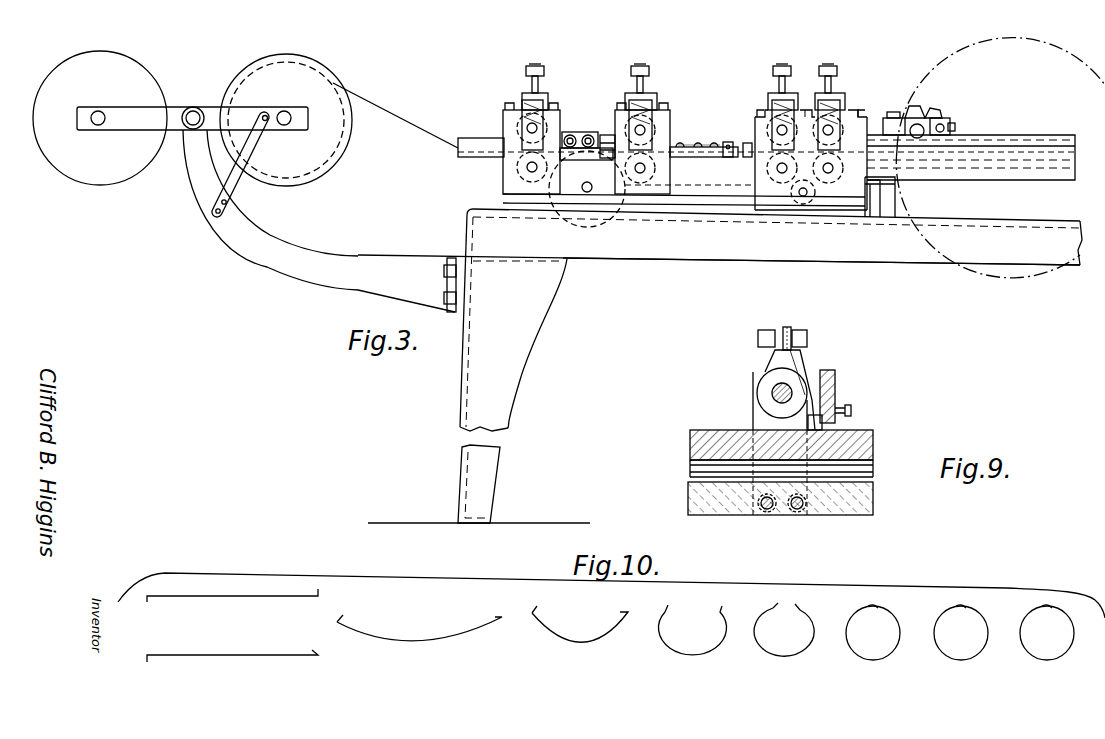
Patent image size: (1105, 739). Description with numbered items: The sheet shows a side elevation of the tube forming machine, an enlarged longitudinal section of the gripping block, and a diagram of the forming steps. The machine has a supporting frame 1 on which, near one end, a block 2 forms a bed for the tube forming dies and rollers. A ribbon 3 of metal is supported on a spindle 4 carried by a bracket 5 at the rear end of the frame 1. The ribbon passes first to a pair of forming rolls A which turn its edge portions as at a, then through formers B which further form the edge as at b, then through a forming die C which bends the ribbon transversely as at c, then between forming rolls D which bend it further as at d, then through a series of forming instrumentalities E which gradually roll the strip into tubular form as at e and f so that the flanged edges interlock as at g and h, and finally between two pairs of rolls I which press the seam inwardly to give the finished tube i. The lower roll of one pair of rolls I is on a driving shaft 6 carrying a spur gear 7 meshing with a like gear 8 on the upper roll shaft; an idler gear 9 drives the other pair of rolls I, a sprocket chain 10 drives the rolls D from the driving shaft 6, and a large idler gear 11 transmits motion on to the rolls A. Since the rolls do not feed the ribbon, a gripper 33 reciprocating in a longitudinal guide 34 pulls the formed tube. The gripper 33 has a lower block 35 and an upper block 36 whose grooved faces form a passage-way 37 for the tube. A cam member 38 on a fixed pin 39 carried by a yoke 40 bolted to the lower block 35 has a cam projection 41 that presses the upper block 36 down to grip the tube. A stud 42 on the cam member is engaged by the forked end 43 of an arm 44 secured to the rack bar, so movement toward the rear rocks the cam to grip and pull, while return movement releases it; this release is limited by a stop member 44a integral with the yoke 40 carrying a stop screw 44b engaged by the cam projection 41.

In FIG. 3, the supporting frame 1 is at (466, 214).
In FIG. 3, the block 2 is at (660, 206).
In FIG. 3, the ribbon 3 is at (388, 106).
In FIG. 3, the spindle 4 is at (284, 110).
In FIG. 3, the bracket 5 is at (325, 256).
In FIG. 3, the driving shaft 6 is at (782, 173).
In FIG. 3, the spur gear 7 is at (764, 176).
In FIG. 3, the gear 8 is at (803, 115).
In FIG. 3, the idler gear 9 is at (803, 205).
In FIG. 3, the sprocket chain 10 is at (705, 186).
In FIG. 3, the large idler gear 11 is at (584, 227).
In FIG. 9, the gripper 33 is at (732, 443).
In FIG. 3, the longitudinal guide 34 is at (1048, 142).
In FIG. 9, the lower block 35 is at (873, 502).
In FIG. 9, the upper block 36 is at (873, 446).
In FIG. 9, the longitudinal passage-way 37 is at (873, 472).
In FIG. 9, the cam member 38 is at (760, 392).
In FIG. 3, the fixed pin 39 is at (914, 126).
In FIG. 9, the fixed pin 39 is at (775, 385).
In FIG. 3, the yoke 40 is at (945, 125).
In FIG. 9, the yoke 40 is at (757, 414).
In FIG. 9, the cam projection 41 is at (822, 422).
In FIG. 3, the stud 42 is at (915, 108).
In FIG. 9, the stud 42 is at (786, 327).
In FIG. 9, the forked end 43 is at (758, 338).
In FIG. 3, the arm 44 is at (935, 112).
In FIG. 9, the stop member 44a is at (835, 375).
In FIG. 3, the stop screw 44b is at (956, 128).
In FIG. 9, the stop screw 44b is at (851, 410).
In FIG. 3, the forming rolls A is at (520, 126).
In FIG. 3, the formers B is at (590, 132).
In FIG. 3, the forming die C is at (607, 135).
In FIG. 3, the forming rolls D is at (660, 140).
In FIG. 3, the forming instrumentalities E is at (714, 146).
In FIG. 3, the rolls I is at (765, 125).
In FIG. 10, the ribbon with turned edges a is at (232, 609).
In FIG. 10, the ribbon with further formed edges b is at (232, 667).
In FIG. 10, the transversely bent ribbon c is at (419, 647).
In FIG. 10, the further bent strip d is at (580, 642).
In FIG. 10, the partly rolled tubular form e is at (693, 643).
In FIG. 10, the nearly tubular form f is at (784, 643).
In FIG. 10, the interlocking flanged edges g is at (873, 644).
In FIG. 10, the interlocked flanged edges h is at (961, 644).
In FIG. 10, the finished tube i is at (1047, 644).